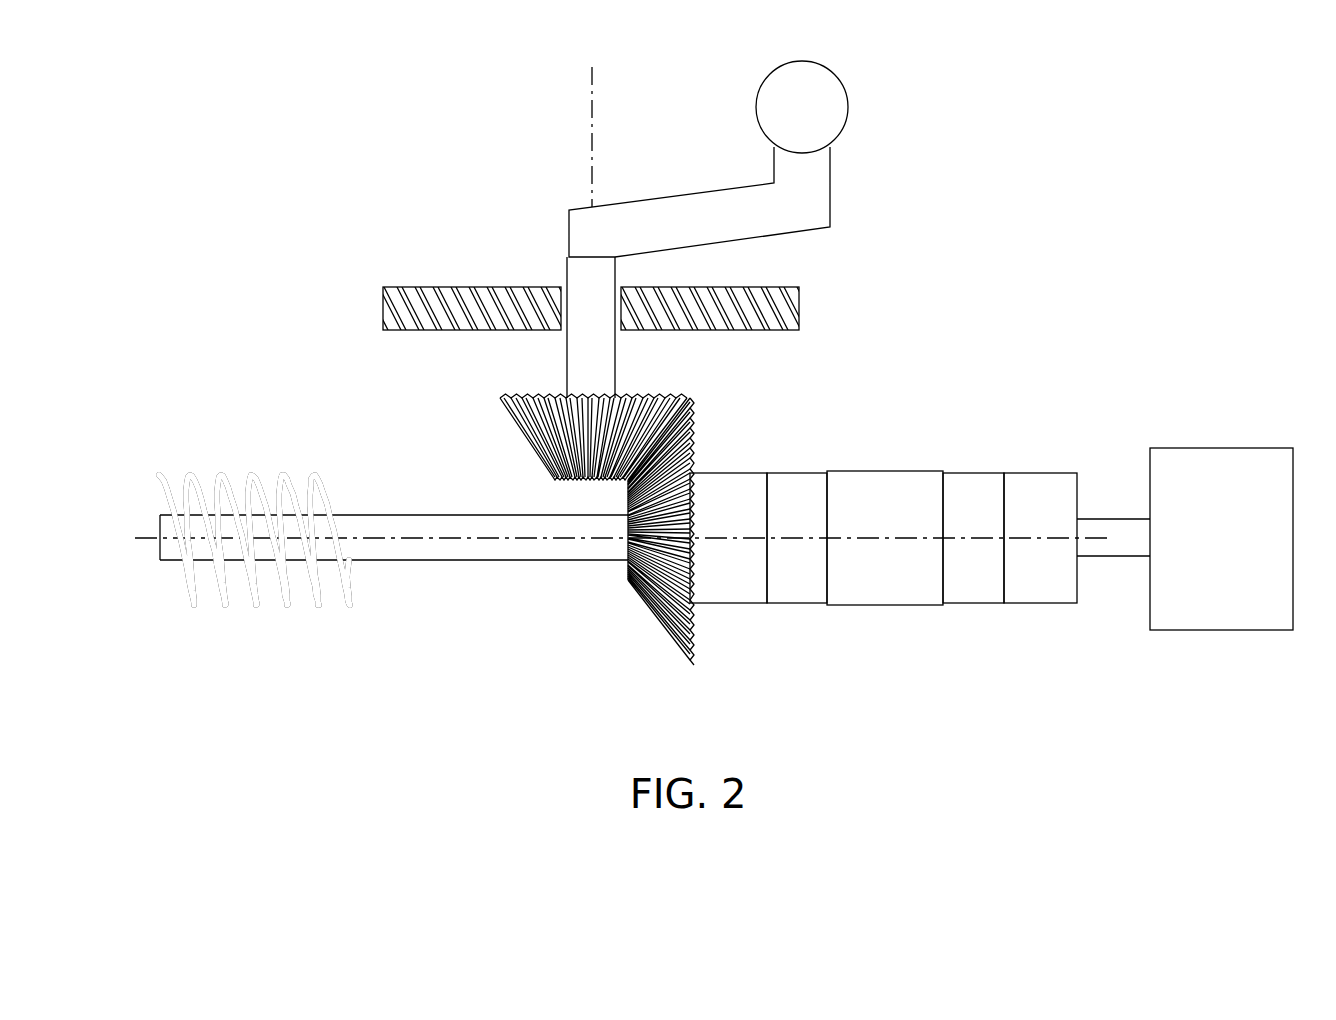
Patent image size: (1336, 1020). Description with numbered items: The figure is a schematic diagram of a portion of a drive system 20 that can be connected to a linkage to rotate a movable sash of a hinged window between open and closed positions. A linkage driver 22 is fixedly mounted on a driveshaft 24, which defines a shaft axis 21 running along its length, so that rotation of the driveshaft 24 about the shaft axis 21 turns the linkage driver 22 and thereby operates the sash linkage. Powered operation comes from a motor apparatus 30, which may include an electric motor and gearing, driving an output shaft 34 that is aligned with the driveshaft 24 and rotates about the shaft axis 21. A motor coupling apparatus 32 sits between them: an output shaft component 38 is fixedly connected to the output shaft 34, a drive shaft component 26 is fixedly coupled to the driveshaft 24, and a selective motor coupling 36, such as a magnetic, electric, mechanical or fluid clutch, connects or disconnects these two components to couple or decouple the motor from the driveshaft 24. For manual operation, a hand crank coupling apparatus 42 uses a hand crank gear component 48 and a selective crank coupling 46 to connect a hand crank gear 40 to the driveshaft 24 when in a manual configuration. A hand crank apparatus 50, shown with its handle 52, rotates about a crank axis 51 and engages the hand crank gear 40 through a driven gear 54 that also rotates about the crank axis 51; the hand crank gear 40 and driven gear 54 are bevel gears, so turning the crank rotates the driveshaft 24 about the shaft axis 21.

The drive system 20 is at (1035, 153).
The shaft axis 21 is at (156, 546).
The linkage driver 22 is at (366, 587).
The driveshaft 24 is at (430, 565).
The drive shaft component 26 is at (872, 608).
The motor apparatus 30 is at (1077, 645).
The motor coupling apparatus 32 is at (1077, 607).
The output shaft 34 is at (1125, 558).
The selective motor coupling 36 is at (960, 472).
The output shaft component 38 is at (1030, 472).
The hand crank gear 40 is at (656, 642).
The hand crank coupling apparatus 42 is at (693, 607).
The selective crank coupling 46 is at (800, 472).
The hand crank gear component 48 is at (720, 472).
The hand crank apparatus 50 is at (524, 162).
The crank axis 51 is at (600, 146).
The crank handle 52 is at (830, 186).
The driven gear 54 is at (522, 440).